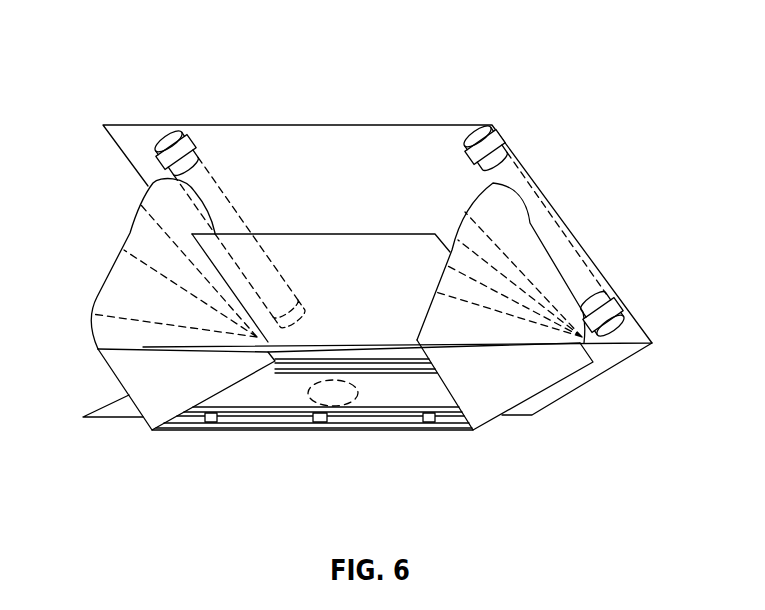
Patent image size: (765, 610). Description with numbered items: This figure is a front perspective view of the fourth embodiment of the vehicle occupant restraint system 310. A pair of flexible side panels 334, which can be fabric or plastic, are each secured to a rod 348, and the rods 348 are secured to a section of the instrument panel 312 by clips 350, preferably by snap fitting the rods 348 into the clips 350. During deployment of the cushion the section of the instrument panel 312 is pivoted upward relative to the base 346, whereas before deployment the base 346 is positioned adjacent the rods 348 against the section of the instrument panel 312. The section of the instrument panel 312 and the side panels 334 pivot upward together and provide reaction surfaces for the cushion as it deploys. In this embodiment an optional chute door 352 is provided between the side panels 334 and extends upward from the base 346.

The vehicle occupant restraint system 310 is at (627, 36).
The instrument panel 312 is at (383, 125).
The side panels 334 is at (113, 273).
The base 346 is at (473, 432).
The rod 348 is at (163, 136).
The clips 350 is at (196, 140).
The chute door 352 is at (282, 233).